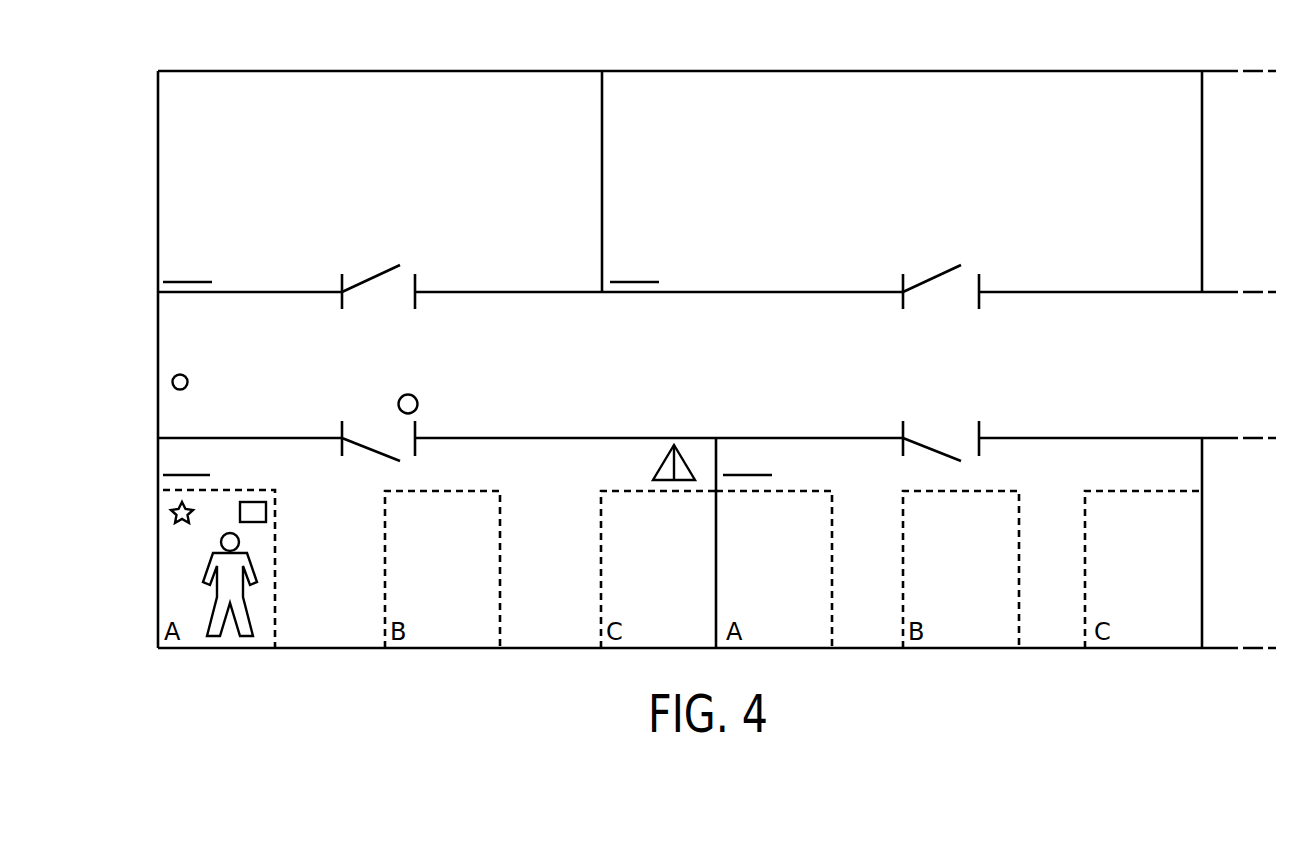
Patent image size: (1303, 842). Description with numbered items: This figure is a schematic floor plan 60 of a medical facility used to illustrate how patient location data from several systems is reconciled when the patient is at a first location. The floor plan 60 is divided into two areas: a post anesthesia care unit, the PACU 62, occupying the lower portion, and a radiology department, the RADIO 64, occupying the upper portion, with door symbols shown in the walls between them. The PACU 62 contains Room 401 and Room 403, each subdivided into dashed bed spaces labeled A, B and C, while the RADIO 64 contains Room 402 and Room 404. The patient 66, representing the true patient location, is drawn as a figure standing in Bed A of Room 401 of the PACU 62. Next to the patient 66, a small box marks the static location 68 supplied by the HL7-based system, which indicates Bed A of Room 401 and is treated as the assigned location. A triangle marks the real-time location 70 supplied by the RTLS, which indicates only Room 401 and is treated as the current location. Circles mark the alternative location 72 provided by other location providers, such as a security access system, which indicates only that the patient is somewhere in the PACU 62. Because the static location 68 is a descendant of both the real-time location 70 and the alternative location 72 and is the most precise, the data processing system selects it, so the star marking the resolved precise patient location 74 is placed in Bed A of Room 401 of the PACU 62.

The floor plan 60 is at (114, 658).
The post anesthesia care unit (PACU) 62 is at (148, 438).
The radiology department (RADIO) 64 is at (148, 292).
The patient 66 is at (238, 637).
The static location 68 is at (266, 515).
The real-time location 70 is at (662, 468).
The alternative location 72 is at (188, 378).
The resolved precise patient location 74 is at (170, 511).
The Room 401 is at (186, 459).
The Room 402 is at (187, 266).
The Room 403 is at (747, 459).
The Room 404 is at (634, 266).